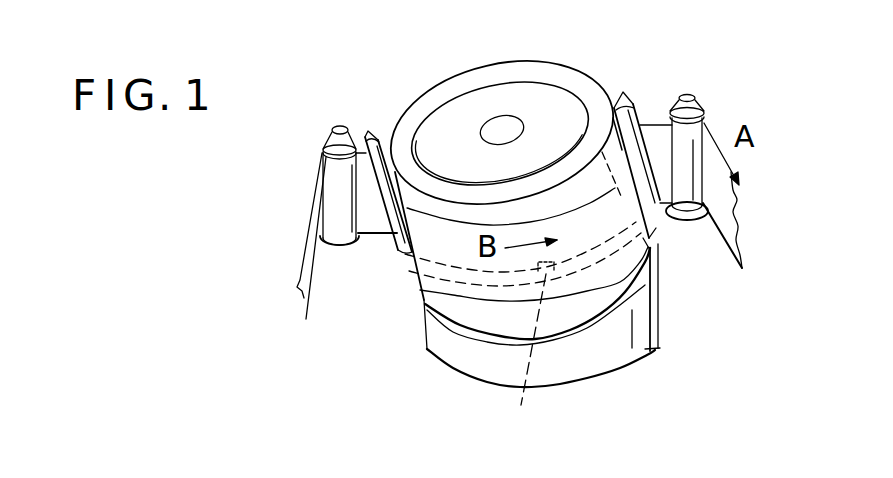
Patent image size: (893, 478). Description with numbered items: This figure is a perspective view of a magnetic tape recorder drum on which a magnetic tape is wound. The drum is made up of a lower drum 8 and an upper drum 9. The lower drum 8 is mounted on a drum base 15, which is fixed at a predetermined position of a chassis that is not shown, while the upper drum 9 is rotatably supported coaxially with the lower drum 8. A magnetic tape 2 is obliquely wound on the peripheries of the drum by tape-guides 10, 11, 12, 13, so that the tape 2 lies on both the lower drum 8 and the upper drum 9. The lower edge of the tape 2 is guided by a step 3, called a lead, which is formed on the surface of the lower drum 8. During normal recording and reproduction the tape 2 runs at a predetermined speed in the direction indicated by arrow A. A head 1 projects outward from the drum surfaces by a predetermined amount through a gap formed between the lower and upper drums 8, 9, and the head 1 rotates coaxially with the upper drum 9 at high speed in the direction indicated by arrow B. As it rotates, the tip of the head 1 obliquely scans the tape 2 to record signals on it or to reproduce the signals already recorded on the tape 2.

The head 1 is at (588, 56).
The magnetic tape 2 is at (306, 247).
The step 3 is at (654, 284).
The lower drum 8 is at (563, 313).
The upper drum 9 is at (440, 97).
The tape-guide 10 is at (333, 170).
The tape-guide 11 is at (378, 133).
The tape-guide 12 is at (626, 100).
The tape-guide 13 is at (697, 140).
The drum base 15 is at (627, 343).